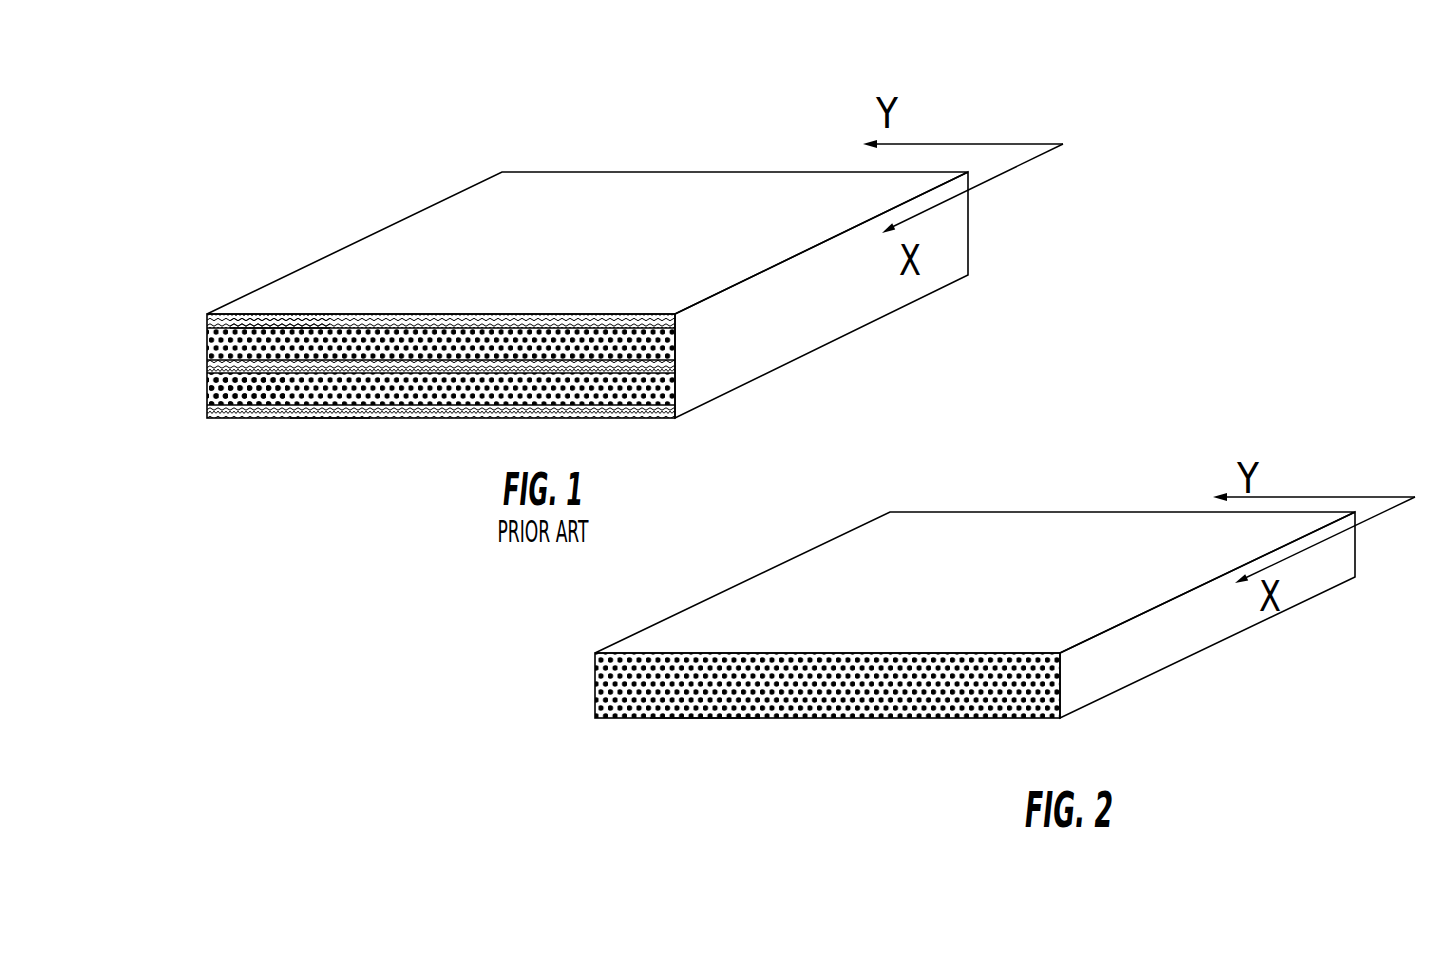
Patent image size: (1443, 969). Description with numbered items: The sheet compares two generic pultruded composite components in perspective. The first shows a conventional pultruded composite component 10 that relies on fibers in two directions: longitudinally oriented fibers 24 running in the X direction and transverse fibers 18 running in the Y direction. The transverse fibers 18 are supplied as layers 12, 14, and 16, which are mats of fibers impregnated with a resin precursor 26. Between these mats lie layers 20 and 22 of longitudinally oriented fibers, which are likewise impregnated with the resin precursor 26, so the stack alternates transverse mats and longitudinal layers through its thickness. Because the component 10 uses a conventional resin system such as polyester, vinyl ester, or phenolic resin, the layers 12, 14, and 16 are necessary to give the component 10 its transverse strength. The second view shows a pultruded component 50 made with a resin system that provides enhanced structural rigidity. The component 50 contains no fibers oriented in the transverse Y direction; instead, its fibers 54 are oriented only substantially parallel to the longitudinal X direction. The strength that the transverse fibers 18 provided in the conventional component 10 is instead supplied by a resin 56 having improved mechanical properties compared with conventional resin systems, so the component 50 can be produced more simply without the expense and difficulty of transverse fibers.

In FIG. 1, the pultruded composite component 10 is at (684, 103).
In FIG. 1, the layer 12 is at (196, 323).
In FIG. 1, the layer 14 is at (196, 369).
In FIG. 1, the layer 16 is at (196, 412).
In FIG. 1, the transverse fibers 18 is at (328, 413).
In FIG. 1, the layer of longitudinally-oriented fibers 20 is at (196, 348).
In FIG. 1, the layer of longitudinally-oriented fibers 22 is at (196, 392).
In FIG. 1, the fibers 24 is at (242, 398).
In FIG. 1, the resin precursor 26 is at (264, 327).
In FIG. 2, the pultruded component 50 is at (1112, 463).
In FIG. 2, the fibers 54 is at (602, 718).
In FIG. 2, the resin 56 is at (695, 718).